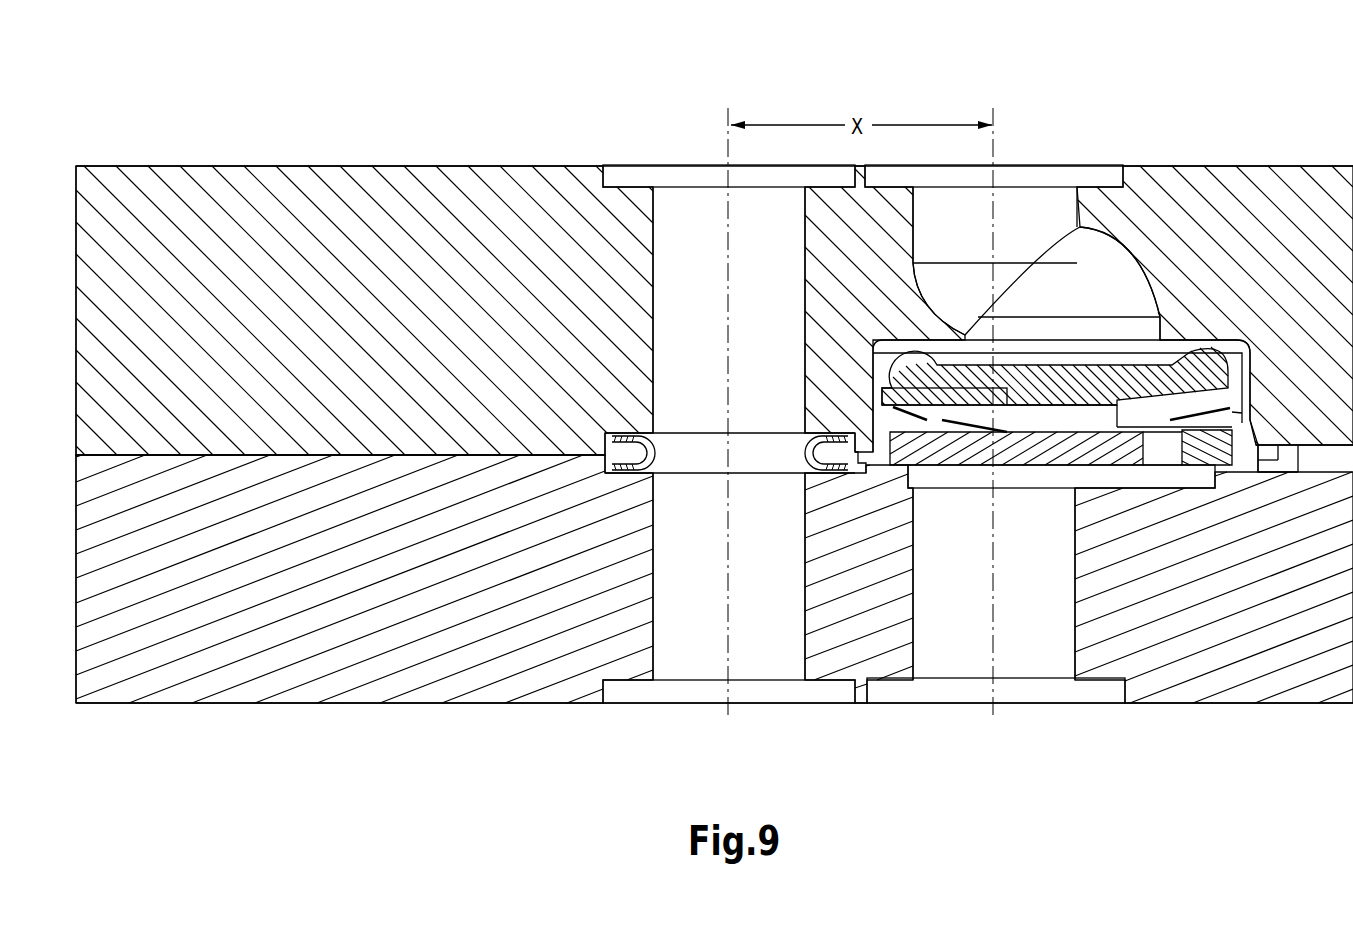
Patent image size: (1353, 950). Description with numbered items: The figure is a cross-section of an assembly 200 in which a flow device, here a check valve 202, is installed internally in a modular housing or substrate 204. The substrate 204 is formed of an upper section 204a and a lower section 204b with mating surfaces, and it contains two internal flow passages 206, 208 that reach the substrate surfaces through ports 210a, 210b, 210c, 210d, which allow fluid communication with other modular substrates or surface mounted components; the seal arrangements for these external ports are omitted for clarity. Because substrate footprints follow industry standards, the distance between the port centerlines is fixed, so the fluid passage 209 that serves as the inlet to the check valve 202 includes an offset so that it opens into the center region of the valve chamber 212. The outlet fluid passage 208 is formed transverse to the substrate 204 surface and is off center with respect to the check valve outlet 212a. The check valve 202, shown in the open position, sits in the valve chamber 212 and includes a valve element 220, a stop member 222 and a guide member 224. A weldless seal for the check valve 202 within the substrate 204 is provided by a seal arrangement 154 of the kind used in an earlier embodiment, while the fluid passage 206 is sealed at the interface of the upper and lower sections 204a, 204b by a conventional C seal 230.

The assembly 200 is at (424, 98).
The check valve 202 is at (960, 482).
The substrate 204 is at (346, 707).
The upper section 204a is at (525, 210).
The lower section 204b is at (510, 598).
The internal flow passage 206 is at (704, 624).
The outlet fluid passage 208 is at (960, 648).
The fluid passage 209 is at (1090, 249).
The port 210a is at (677, 158).
The port 210b is at (769, 712).
The port 210c is at (1083, 158).
The port 210d is at (1087, 707).
The valve chamber 212 is at (1243, 345).
The check valve outlet 212a is at (1075, 478).
The valve element 220 is at (1135, 357).
The stop member 222 is at (1148, 447).
The guide member 224 is at (957, 408).
The C seal 230 is at (660, 447).
The seal arrangement 154 is at (882, 480).